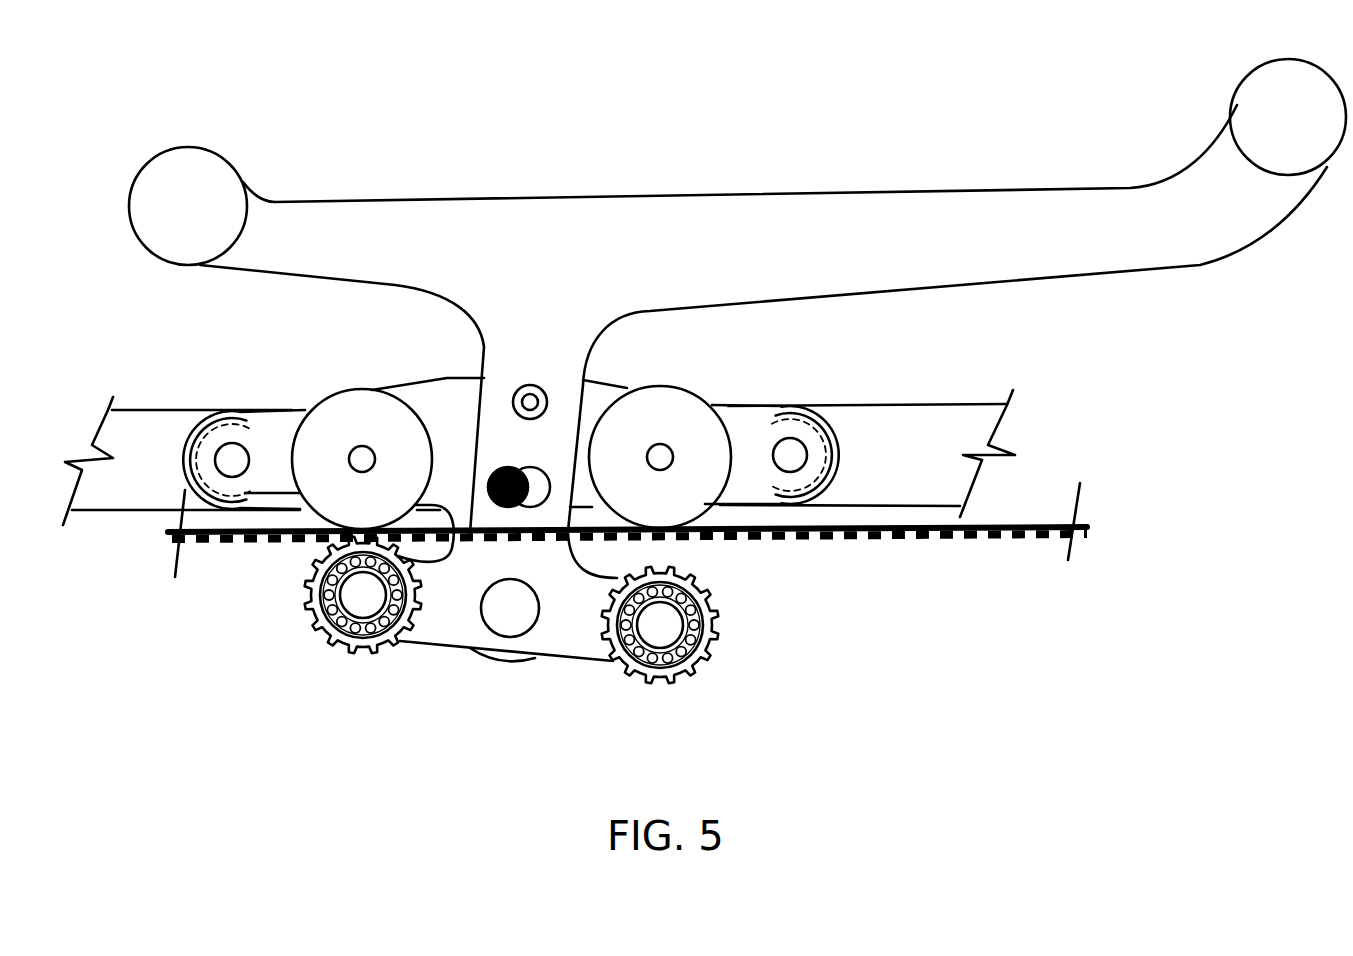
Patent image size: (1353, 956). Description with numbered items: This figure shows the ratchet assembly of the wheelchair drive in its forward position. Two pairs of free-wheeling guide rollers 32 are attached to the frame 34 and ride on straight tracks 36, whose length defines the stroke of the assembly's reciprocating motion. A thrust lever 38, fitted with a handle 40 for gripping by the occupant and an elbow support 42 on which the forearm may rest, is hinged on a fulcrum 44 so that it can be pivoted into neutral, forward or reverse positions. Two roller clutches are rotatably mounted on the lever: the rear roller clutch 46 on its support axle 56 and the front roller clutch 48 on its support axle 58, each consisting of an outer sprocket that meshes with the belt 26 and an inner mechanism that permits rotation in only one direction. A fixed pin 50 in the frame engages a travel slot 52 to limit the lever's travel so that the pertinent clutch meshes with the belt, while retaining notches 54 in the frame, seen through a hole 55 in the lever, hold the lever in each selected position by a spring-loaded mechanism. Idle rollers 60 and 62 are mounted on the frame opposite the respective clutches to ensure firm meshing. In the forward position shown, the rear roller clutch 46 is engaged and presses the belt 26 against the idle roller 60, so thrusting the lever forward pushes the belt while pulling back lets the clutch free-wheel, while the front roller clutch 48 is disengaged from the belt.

The belt 26 is at (928, 534).
The free-wheeling guide rollers 32 is at (243, 417).
The frame 34 is at (437, 379).
The straight tracks 36 is at (157, 438).
The thrust lever 38 is at (797, 193).
The handle 40 is at (1270, 88).
The elbow support 42 is at (200, 180).
The fulcrum 44 is at (512, 615).
The rear roller clutch 46 is at (321, 641).
The front roller clutch 48 is at (702, 625).
The fixed pin 50 is at (498, 468).
The travel slot 52 is at (545, 470).
The retaining notches 54 is at (517, 390).
The hole 55 is at (547, 392).
The support axle 56 is at (372, 599).
The support axle 58 is at (660, 638).
The idle roller 60 is at (348, 411).
The idle roller 62 is at (685, 413).